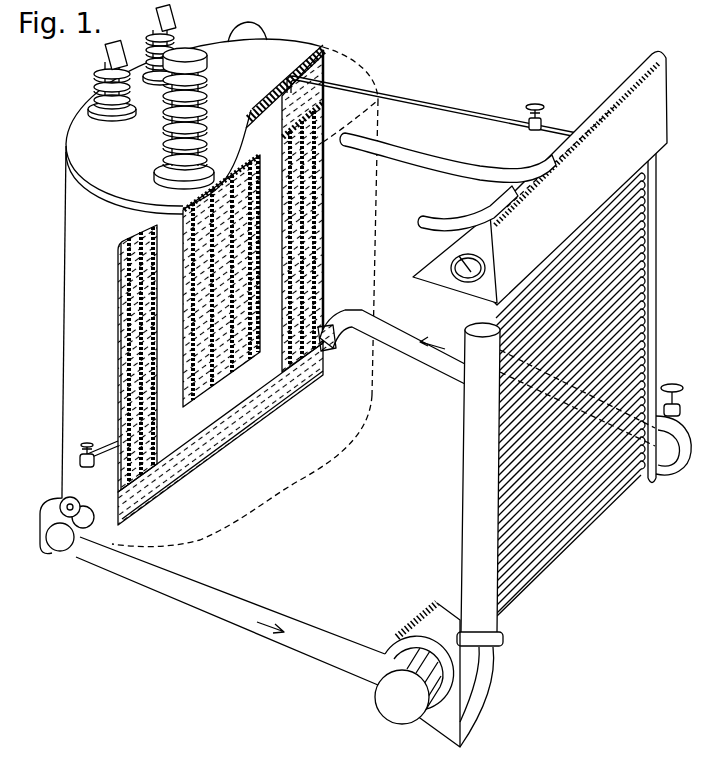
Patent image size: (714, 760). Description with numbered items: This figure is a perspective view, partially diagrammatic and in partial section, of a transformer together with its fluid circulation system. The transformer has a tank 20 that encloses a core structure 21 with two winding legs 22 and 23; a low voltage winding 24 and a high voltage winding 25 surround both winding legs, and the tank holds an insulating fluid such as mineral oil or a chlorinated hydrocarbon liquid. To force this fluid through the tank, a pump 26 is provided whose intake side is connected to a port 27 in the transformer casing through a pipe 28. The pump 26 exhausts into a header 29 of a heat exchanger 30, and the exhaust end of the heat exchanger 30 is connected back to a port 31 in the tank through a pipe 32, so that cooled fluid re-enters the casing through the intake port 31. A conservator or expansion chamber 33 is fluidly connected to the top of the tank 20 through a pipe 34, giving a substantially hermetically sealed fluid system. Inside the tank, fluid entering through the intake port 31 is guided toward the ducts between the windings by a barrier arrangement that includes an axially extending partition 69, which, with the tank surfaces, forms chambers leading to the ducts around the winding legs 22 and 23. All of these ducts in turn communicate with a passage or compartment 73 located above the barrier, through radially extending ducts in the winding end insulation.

The tank 20 is at (67, 216).
The core structure 21 is at (237, 400).
The winding leg 22 is at (234, 281).
The winding leg 23 is at (150, 358).
The low voltage winding 24 is at (115, 404).
The high voltage winding 25 is at (118, 338).
The pump 26 is at (393, 641).
The port 27 is at (104, 509).
The pipe 28 is at (192, 598).
The header 29 is at (469, 552).
The heat exchanger 30 is at (596, 581).
The port 31 is at (325, 346).
The pipe 32 is at (402, 330).
The conservator 33 is at (608, 173).
The pipe 34 is at (493, 117).
The partition 69 is at (219, 440).
The passage or compartment 73 is at (306, 96).